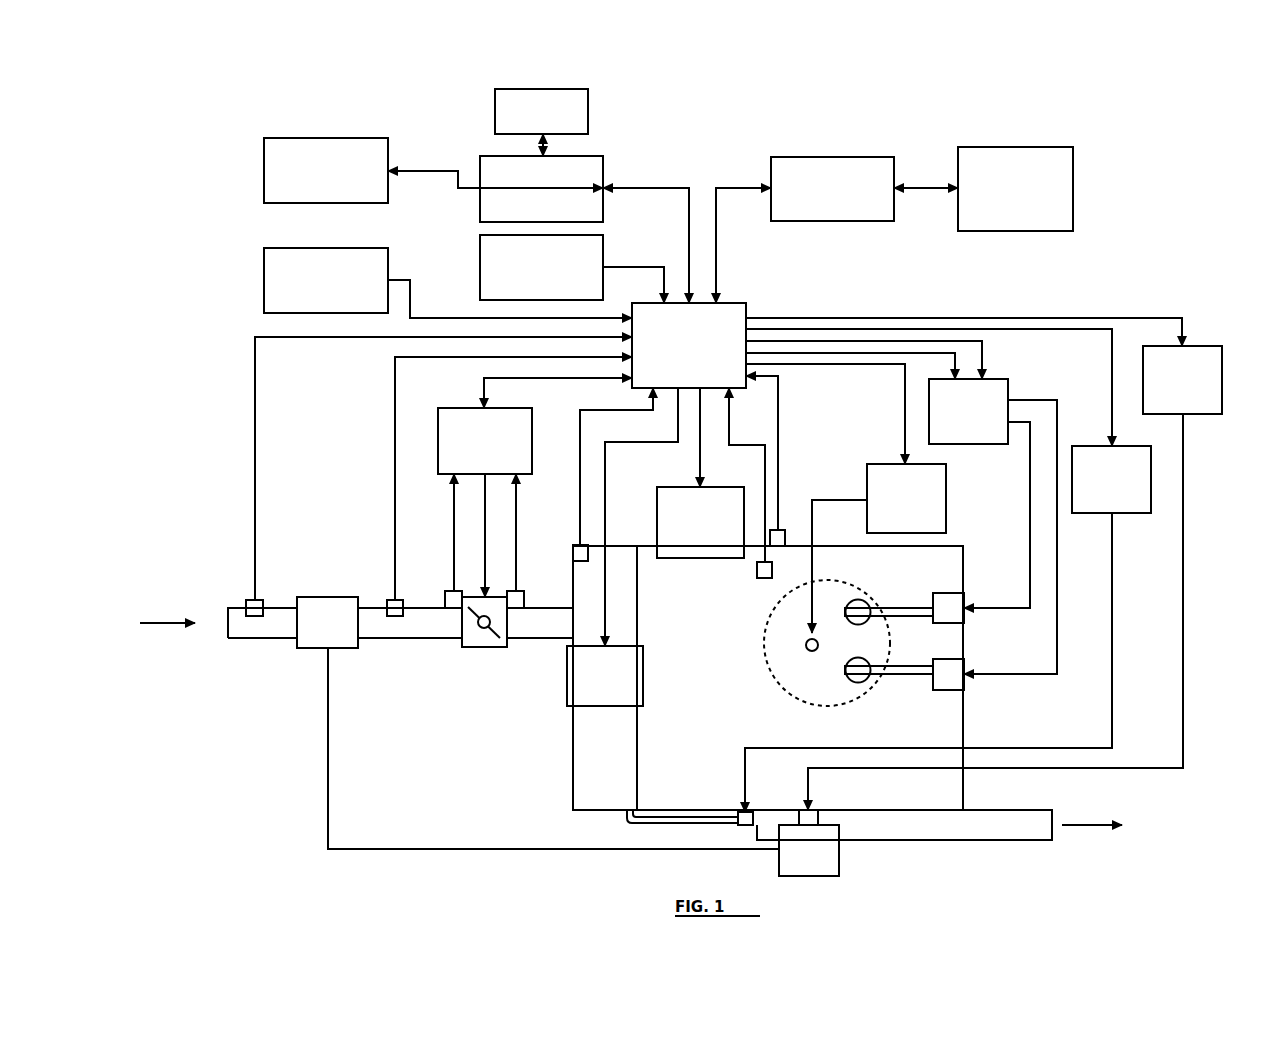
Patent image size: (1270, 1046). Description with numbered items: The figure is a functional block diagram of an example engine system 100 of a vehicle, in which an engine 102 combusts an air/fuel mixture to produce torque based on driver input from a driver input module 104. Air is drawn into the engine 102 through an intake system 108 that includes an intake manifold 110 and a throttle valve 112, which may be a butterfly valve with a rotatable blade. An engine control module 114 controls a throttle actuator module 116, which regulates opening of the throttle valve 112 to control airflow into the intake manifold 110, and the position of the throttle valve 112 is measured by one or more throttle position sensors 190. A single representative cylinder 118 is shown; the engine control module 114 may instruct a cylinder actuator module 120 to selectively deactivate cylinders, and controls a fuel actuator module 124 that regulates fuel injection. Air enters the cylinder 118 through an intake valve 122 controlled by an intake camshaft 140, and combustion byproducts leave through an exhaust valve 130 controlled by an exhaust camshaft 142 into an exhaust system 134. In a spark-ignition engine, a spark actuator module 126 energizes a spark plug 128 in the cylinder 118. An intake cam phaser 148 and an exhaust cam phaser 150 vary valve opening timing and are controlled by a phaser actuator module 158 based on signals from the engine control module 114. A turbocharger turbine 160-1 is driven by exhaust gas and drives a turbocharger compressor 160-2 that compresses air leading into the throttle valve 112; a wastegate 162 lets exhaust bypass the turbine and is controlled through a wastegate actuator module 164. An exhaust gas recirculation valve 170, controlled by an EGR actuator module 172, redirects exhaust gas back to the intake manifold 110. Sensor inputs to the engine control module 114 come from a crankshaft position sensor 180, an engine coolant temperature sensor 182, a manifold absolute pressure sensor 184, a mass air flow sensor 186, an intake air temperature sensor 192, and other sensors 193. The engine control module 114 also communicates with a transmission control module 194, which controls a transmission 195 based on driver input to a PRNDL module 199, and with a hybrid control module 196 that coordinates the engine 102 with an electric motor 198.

The engine system 100 is at (1208, 128).
The engine 102 is at (963, 550).
The driver input module 104 is at (480, 270).
The intake system 108 is at (225, 672).
The intake manifold 110 is at (573, 760).
The throttle valve 112 is at (482, 647).
The engine control module 114 is at (746, 308).
The throttle actuator module 116 is at (460, 408).
The cylinder 118 is at (790, 700).
The cylinder actuator module 120 is at (710, 487).
The intake valve 122 is at (858, 600).
The fuel actuator module 124 is at (630, 706).
The spark actuator module 126 is at (946, 497).
The spark plug 128 is at (806, 645).
The exhaust valve 130 is at (858, 683).
The exhaust system 134 is at (1030, 842).
The intake camshaft 140 is at (910, 608).
The exhaust camshaft 142 is at (910, 674).
The intake cam phaser 148 is at (948, 593).
The exhaust cam phaser 150 is at (950, 690).
The phaser actuator module 158 is at (1008, 388).
The turbocharger turbine 160-1 is at (839, 860).
The turbocharger compressor 160-2 is at (312, 648).
The wastegate 162 is at (810, 810).
The wastegate actuator module 164 is at (1205, 414).
The exhaust gas recirculation valve 170 is at (745, 825).
The EGR actuator module 172 is at (1128, 513).
The crankshaft position sensor 180 is at (782, 530).
The engine coolant temperature sensor 182 is at (762, 578).
The manifold absolute pressure sensor 184 is at (575, 545).
The mass air flow sensor 186 is at (390, 600).
The throttle position sensors 190 is at (450, 608).
The intake air temperature sensor 192 is at (248, 600).
The other sensors 193 is at (264, 282).
The transmission control module 194 is at (603, 168).
The transmission 195 is at (264, 170).
The hybrid control module 196 is at (833, 221).
The electric motor 198 is at (1022, 231).
The PRNDL module 199 is at (588, 130).